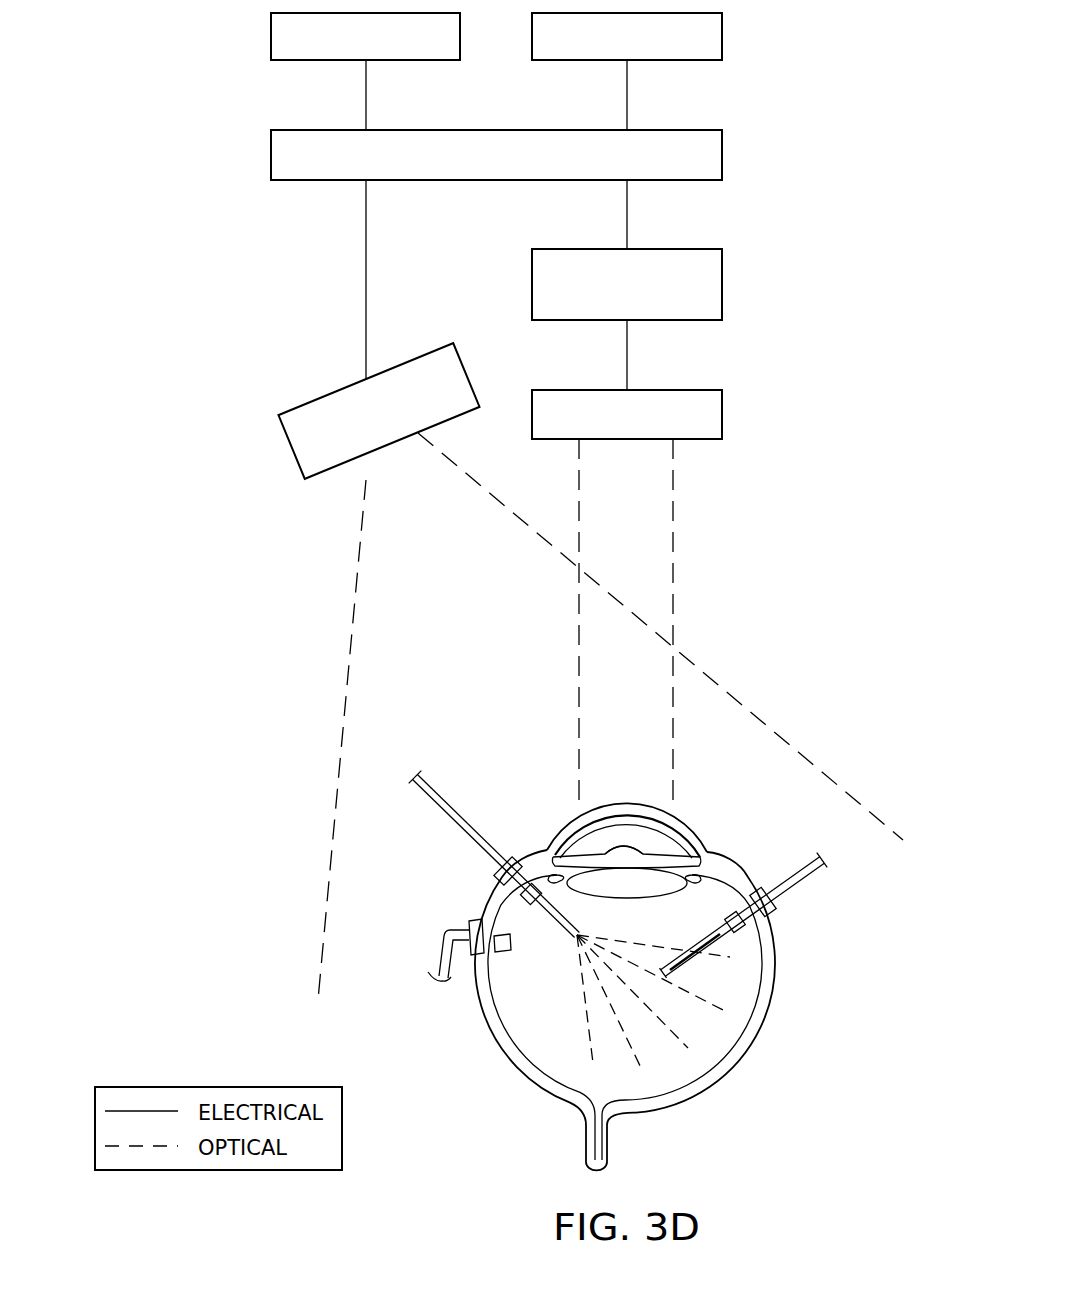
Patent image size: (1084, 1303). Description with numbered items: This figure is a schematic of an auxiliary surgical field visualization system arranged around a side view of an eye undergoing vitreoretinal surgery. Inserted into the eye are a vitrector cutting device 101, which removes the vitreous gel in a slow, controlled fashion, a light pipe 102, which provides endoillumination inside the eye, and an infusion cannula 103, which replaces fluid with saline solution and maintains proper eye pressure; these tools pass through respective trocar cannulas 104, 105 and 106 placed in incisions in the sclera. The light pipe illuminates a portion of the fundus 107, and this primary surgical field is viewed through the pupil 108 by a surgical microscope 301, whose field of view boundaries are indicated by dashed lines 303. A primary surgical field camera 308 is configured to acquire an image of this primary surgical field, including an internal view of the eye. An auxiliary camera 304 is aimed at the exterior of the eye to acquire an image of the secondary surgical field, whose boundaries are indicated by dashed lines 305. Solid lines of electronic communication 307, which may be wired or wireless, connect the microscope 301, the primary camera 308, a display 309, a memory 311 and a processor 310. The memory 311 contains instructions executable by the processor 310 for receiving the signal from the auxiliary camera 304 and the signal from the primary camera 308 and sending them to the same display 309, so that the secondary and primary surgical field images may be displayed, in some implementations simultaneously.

The vitrector cutting device 101 is at (812, 876).
The light pipe 102 is at (448, 800).
The infusion cannula 103 is at (440, 955).
The trocar cannula 104 is at (760, 893).
The trocar cannula 105 is at (512, 858).
The trocar cannula 106 is at (470, 925).
The illuminated portion of the fundus 107 is at (582, 990).
The pupil 108 is at (624, 845).
The surgical microscope 301 is at (723, 413).
The dashed lines indicating boundaries of the primary surgical field 303 is at (675, 500).
The auxiliary camera 304 is at (288, 447).
The dashed lines indicating boundaries of the secondary surgical field 305 is at (344, 714).
The electronic communication 307 is at (365, 95).
The primary surgical field camera 308 is at (723, 284).
The display 309 is at (723, 36).
The processor 310 is at (270, 155).
The memory 311 is at (270, 33).